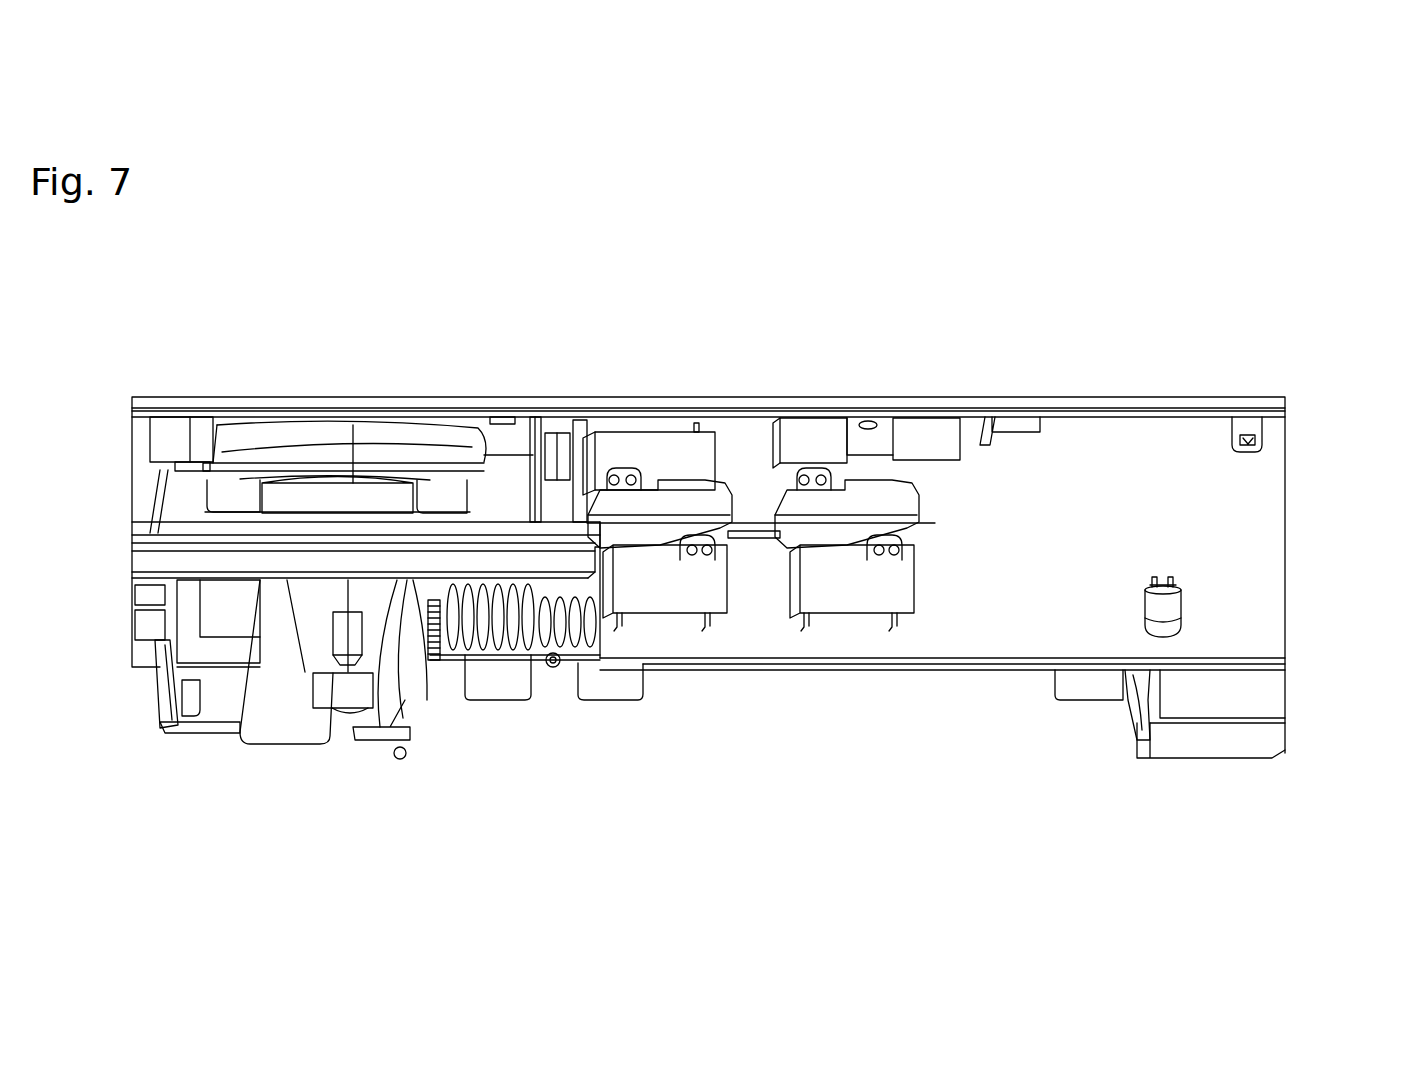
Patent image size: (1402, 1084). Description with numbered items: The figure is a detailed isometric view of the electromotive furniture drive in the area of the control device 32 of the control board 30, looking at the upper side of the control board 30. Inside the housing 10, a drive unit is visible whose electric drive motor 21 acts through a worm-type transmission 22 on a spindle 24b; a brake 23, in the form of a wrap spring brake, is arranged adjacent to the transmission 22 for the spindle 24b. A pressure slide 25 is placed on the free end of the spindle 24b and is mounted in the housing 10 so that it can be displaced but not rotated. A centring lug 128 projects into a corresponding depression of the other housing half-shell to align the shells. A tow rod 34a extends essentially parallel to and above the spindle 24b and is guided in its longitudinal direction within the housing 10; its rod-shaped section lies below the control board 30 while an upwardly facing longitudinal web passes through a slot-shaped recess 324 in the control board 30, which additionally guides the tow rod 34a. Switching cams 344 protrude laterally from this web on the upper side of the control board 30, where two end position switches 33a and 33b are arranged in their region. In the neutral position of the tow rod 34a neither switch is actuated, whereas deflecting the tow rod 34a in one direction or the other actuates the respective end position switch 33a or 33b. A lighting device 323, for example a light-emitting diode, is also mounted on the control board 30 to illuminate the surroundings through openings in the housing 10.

The housing 10 is at (1113, 277).
The centring lugs 128 is at (182, 440).
The electric drive motor 21 is at (273, 427).
The transmission 22 is at (293, 710).
The brake 23 is at (400, 582).
The spindle 24b is at (498, 652).
The pressure slide 25 is at (1210, 738).
The control board 30 is at (1168, 452).
The control device 32 is at (1012, 630).
The lighting device 323 is at (1168, 605).
The slot-shaped recess 324 is at (930, 523).
The end position switch 33a is at (628, 447).
The end position switch 33b is at (863, 450).
The switching cams 344 is at (677, 502).
The tow rod 34a is at (383, 530).